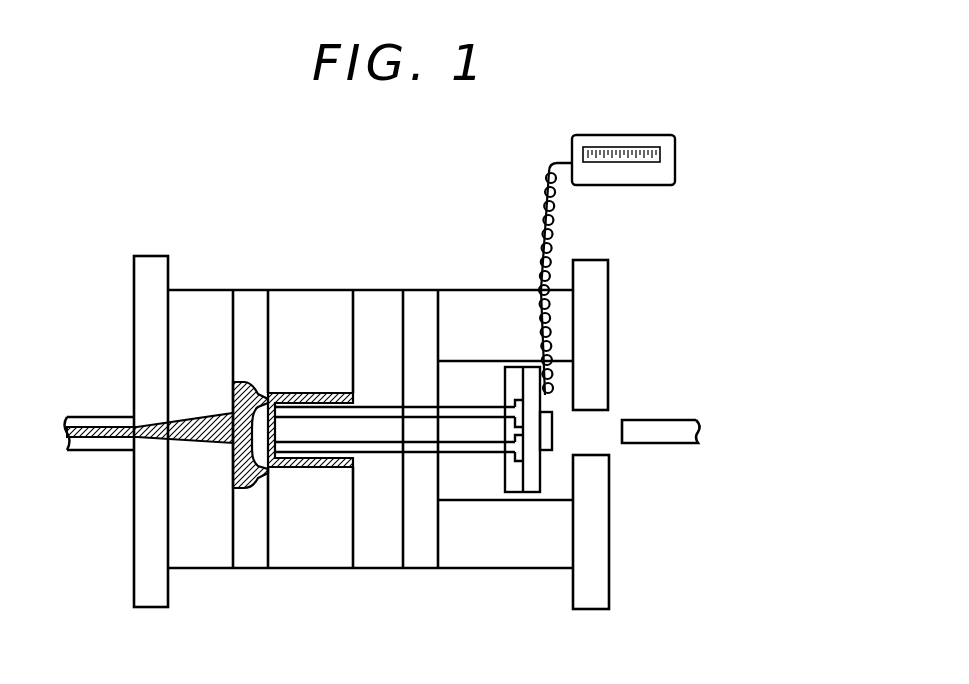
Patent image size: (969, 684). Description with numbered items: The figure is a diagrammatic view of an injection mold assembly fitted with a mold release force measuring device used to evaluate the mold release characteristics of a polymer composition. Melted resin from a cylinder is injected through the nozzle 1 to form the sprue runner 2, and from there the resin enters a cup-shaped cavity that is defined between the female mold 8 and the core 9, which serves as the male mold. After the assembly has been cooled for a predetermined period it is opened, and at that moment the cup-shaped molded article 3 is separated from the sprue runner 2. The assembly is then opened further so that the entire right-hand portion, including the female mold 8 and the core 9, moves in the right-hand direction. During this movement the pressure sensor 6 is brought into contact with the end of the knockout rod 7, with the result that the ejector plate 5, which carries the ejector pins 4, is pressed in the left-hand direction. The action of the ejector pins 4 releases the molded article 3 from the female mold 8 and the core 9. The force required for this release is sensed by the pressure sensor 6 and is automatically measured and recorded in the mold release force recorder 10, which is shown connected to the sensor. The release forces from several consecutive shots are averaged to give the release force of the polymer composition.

The nozzle 1 is at (92, 445).
The sprue runner 2 is at (205, 433).
The molded article 3 is at (317, 467).
The ejector pins 4 is at (478, 452).
The ejector plate 5 is at (515, 483).
The pressure sensor 6 is at (552, 437).
The knockout rod 7 is at (668, 435).
The female mold 8 is at (305, 348).
The core 9 is at (373, 348).
The mold release force recorder 10 is at (665, 170).